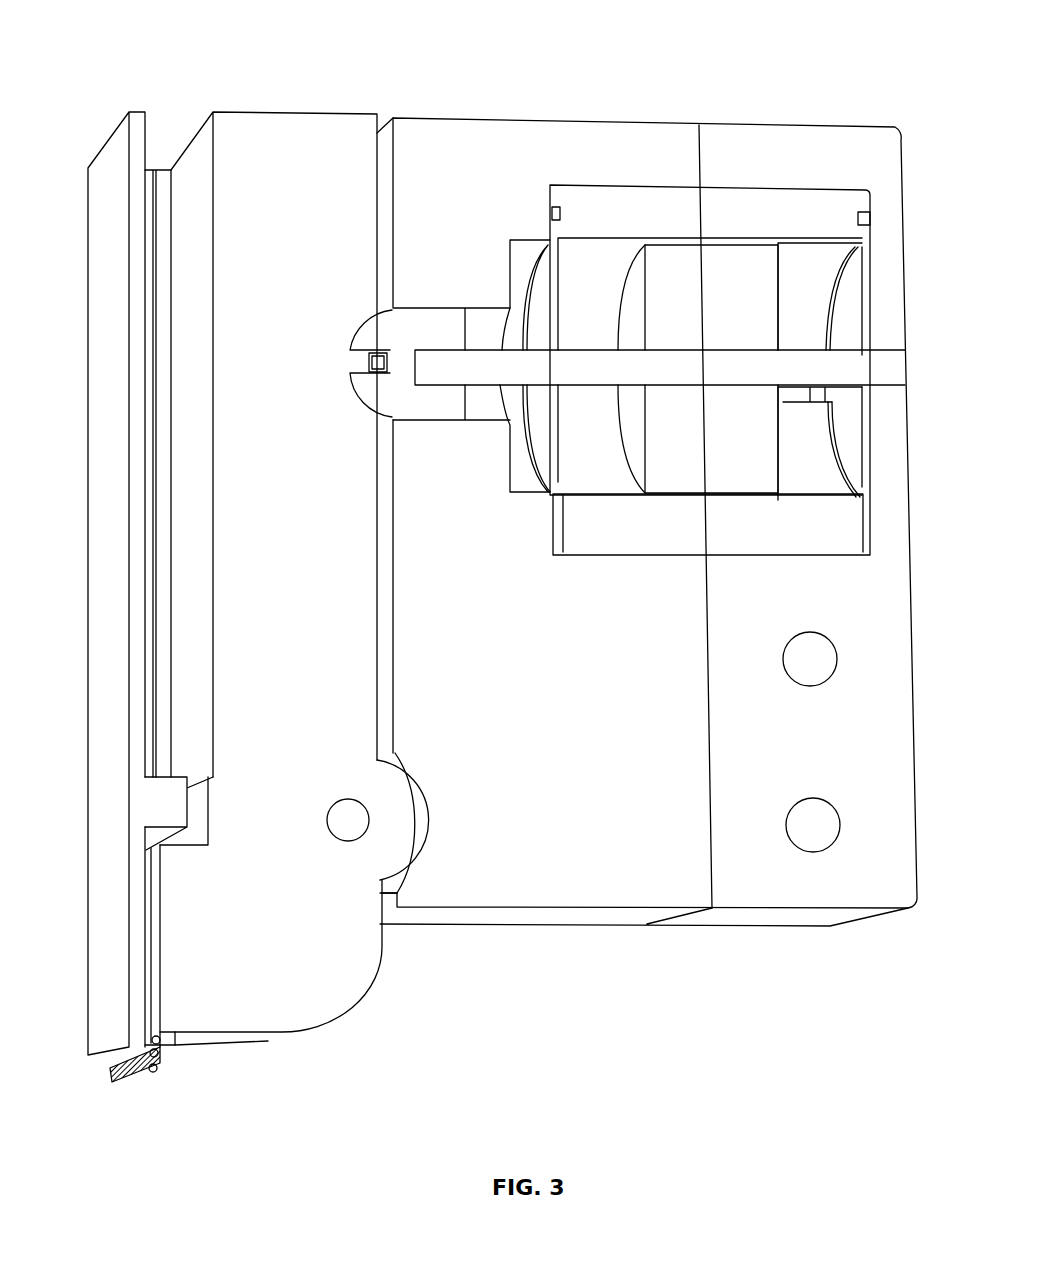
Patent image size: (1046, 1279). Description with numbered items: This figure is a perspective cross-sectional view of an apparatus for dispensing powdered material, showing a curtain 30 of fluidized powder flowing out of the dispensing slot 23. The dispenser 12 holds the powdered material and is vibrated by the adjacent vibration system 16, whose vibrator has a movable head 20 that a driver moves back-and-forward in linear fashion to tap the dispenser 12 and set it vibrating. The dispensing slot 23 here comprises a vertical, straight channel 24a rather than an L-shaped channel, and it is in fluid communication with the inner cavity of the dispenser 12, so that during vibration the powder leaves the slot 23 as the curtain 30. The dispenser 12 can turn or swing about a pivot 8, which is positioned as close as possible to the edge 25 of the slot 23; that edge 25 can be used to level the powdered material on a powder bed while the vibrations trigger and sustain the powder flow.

The head 20 is at (645, 73).
The vibration system 16 is at (820, 483).
The pivot 8 is at (342, 822).
The dispenser 12 is at (318, 980).
The vertical, straight channel 24a is at (153, 993).
The edge 25 is at (173, 1048).
The dispensing slot 23 is at (162, 1053).
The curtain 30 is at (107, 1083).